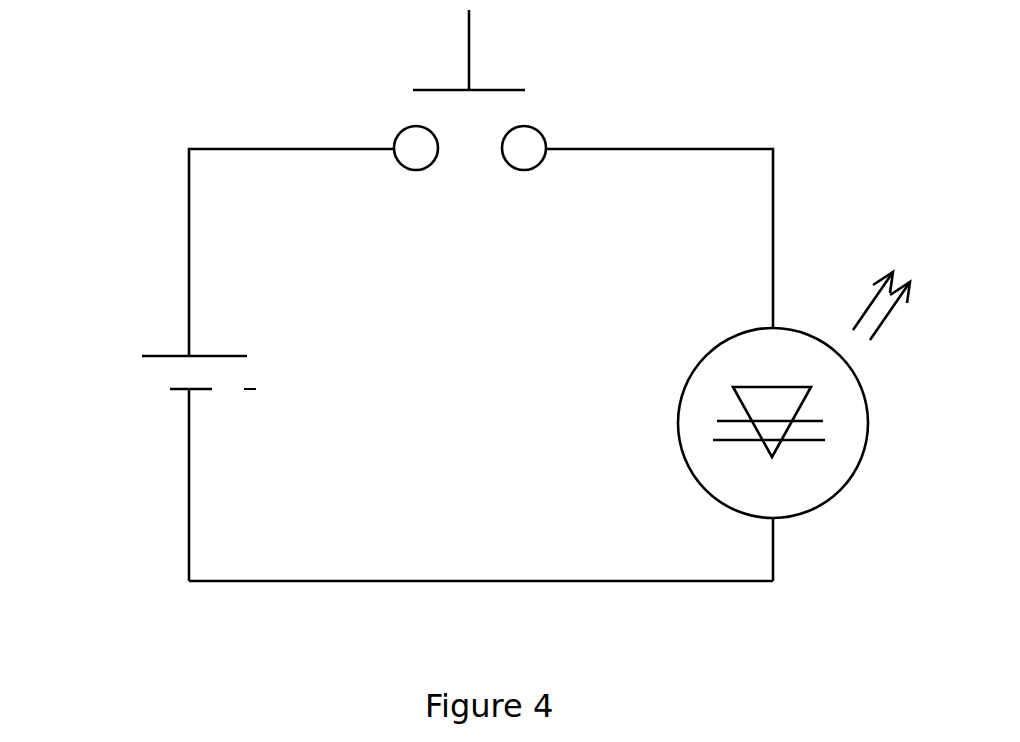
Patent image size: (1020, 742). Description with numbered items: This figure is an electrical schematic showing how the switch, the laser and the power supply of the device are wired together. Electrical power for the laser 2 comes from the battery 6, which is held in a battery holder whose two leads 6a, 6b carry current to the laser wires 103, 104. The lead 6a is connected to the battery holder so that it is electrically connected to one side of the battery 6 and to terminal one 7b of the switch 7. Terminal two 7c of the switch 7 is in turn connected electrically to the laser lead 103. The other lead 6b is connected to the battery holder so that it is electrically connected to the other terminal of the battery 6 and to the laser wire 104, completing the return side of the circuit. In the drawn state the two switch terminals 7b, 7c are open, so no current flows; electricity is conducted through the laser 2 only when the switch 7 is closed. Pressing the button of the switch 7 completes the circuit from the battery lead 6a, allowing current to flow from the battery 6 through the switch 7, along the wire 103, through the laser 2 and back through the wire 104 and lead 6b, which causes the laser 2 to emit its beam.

The laser 2 is at (796, 395).
The battery 6 is at (150, 456).
The battery lead 6a is at (264, 239).
The battery lead 6b is at (481, 618).
The switch 7 is at (471, 50).
The terminal one of the switch 7b is at (418, 174).
The terminal two of the switch 7c is at (541, 166).
The laser wire 103 is at (719, 237).
The laser wire 104 is at (737, 574).